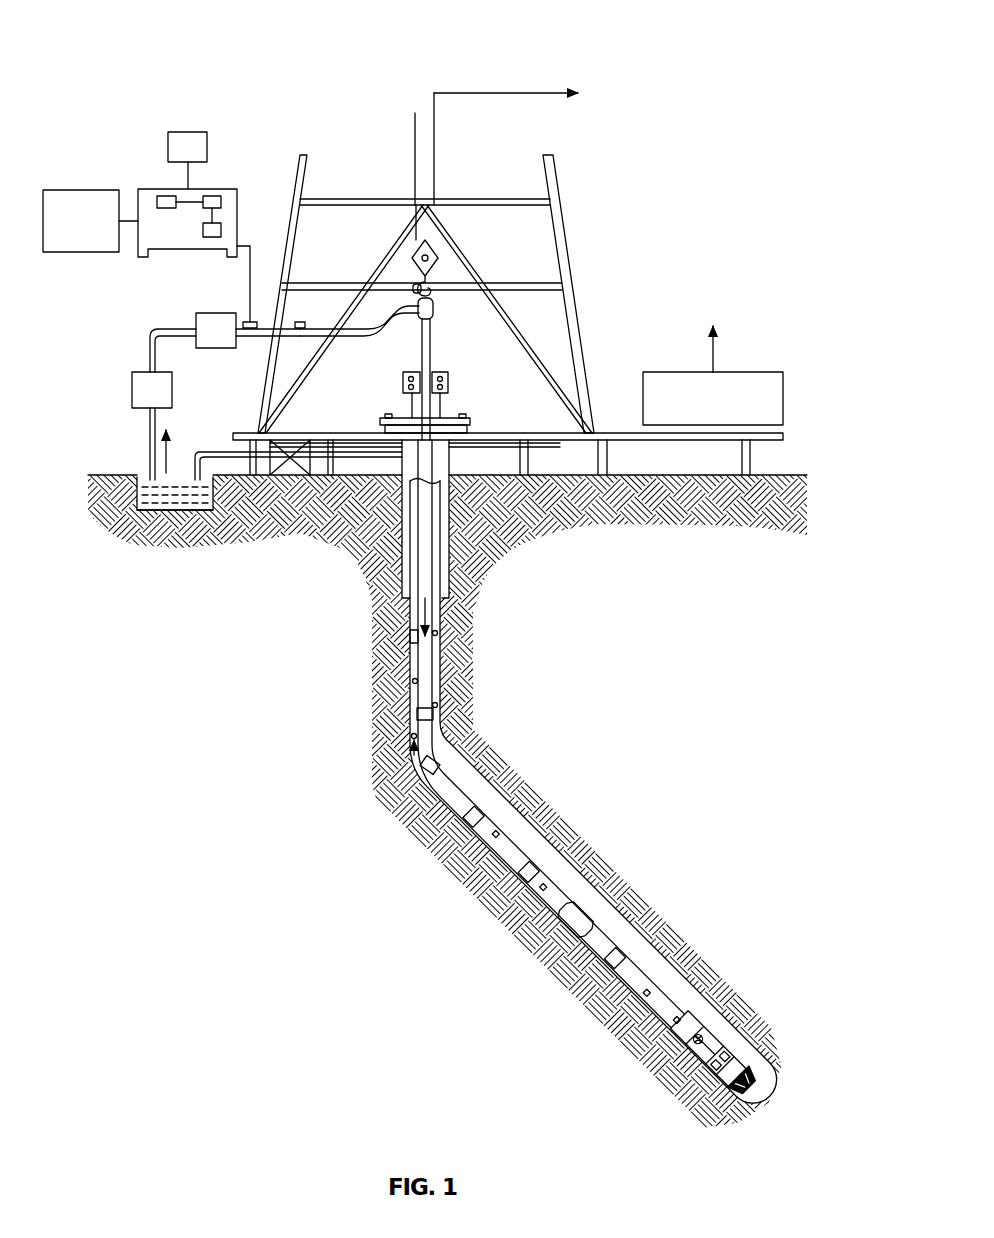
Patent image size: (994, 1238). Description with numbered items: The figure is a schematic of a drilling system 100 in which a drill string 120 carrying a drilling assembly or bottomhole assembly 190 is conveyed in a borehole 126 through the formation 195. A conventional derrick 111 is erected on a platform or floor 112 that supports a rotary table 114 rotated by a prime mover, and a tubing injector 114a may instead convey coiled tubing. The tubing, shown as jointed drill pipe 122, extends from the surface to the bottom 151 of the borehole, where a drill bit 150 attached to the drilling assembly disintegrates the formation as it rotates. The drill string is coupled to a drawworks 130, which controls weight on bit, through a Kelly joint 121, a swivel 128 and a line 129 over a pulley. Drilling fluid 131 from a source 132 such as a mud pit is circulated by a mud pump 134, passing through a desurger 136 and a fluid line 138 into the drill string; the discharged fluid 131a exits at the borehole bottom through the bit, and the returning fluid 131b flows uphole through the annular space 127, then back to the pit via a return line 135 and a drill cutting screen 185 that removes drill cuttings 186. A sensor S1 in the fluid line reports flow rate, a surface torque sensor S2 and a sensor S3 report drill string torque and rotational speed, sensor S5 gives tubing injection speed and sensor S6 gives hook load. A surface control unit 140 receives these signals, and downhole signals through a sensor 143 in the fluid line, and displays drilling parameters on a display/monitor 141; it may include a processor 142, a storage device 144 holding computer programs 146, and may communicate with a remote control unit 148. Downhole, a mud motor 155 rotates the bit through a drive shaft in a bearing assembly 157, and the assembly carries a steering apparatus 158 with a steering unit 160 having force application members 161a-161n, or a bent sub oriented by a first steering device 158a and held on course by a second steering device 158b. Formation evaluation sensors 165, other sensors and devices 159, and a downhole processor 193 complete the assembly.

The drilling system 100 is at (124, 60).
The derrick 111 is at (578, 300).
The platform or floor 112 is at (593, 430).
The rotary table 114 is at (448, 417).
The tubing injector 114a is at (449, 383).
The drill string 120 is at (441, 677).
The Kelly joint 121 is at (432, 360).
The drill pipe 122 is at (415, 668).
The borehole 126 is at (450, 742).
The annular space 127 is at (462, 790).
The swivel 128 is at (410, 313).
The line 129 is at (434, 176).
The drawworks 130 is at (740, 372).
The drilling fluid 131 is at (135, 508).
The drilling fluid discharged from the drilling tubular 131a is at (415, 612).
The returning drilling fluid 131b is at (412, 768).
The source of drilling fluid 132 is at (158, 485).
The mud pump 134 is at (132, 390).
The return line 135 is at (340, 468).
The desurger 136 is at (196, 320).
The fluid line 138 is at (265, 337).
The surface control unit 140 is at (173, 189).
The display/monitor 141 is at (185, 132).
The processor 142 is at (160, 196).
The sensor 143 is at (248, 322).
The storage device 144 is at (216, 196).
The computer programs 146 is at (212, 237).
The remote control unit 148 is at (100, 190).
The drill bit 150 is at (749, 1068).
The borehole bottom 151 is at (715, 1122).
The downhole motor 155 is at (522, 845).
The bearing assembly 157 is at (749, 977).
The steering apparatus 158 is at (720, 1028).
The first steering device 158a is at (697, 1100).
The second steering device 158b is at (690, 1083).
The sensors and devices 159 is at (745, 1045).
The steering unit 160 is at (678, 1060).
The force application members 161a-161n is at (700, 1038).
The formation evaluation sensors 165 is at (607, 983).
The drill cutting screen 185 is at (280, 430).
The drill cuttings 186 is at (438, 633).
The drilling assembly 190 is at (611, 917).
The downhole processor 193 is at (560, 948).
The formation 195 is at (693, 833).
The flow rate sensor S1 is at (300, 322).
The surface torque sensor S2 is at (470, 421).
The rotational speed sensor S3 is at (384, 418).
The tubing injection speed sensor S5 is at (437, 328).
The hook load sensor S6 is at (433, 292).